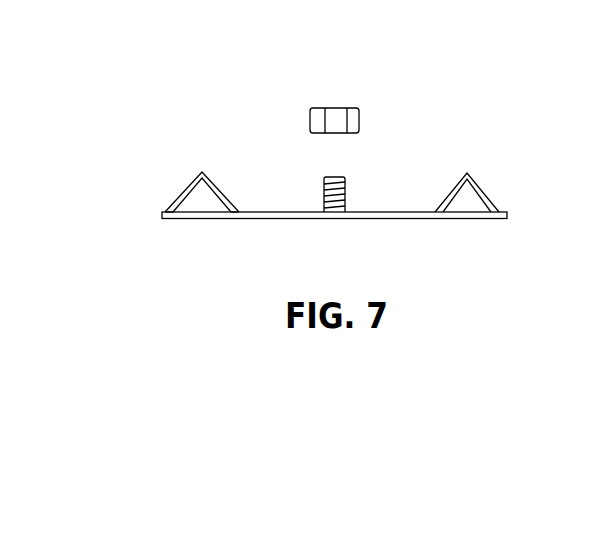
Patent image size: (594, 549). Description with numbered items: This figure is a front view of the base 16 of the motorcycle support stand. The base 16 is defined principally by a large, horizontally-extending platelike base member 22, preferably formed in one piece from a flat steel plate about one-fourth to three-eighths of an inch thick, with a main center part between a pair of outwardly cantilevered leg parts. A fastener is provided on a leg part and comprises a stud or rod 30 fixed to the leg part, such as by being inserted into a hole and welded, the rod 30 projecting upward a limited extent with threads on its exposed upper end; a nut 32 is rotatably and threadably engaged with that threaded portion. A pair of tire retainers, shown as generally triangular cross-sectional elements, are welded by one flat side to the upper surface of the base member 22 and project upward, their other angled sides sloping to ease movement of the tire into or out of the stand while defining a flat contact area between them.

The base 16 is at (460, 123).
The base member 22 is at (407, 219).
The rod 30 is at (323, 196).
The nut 32 is at (350, 106).